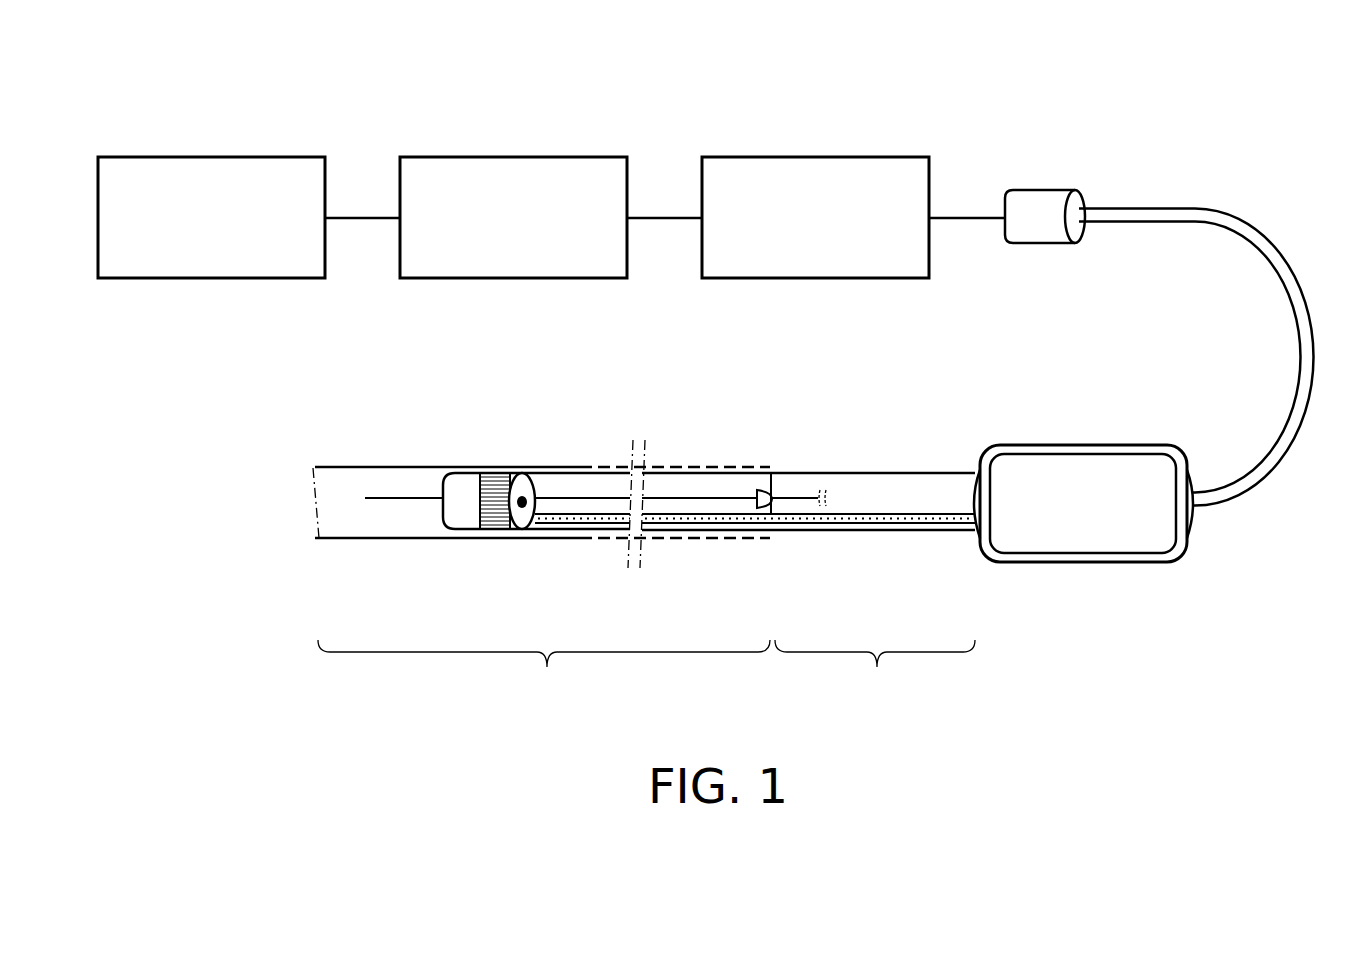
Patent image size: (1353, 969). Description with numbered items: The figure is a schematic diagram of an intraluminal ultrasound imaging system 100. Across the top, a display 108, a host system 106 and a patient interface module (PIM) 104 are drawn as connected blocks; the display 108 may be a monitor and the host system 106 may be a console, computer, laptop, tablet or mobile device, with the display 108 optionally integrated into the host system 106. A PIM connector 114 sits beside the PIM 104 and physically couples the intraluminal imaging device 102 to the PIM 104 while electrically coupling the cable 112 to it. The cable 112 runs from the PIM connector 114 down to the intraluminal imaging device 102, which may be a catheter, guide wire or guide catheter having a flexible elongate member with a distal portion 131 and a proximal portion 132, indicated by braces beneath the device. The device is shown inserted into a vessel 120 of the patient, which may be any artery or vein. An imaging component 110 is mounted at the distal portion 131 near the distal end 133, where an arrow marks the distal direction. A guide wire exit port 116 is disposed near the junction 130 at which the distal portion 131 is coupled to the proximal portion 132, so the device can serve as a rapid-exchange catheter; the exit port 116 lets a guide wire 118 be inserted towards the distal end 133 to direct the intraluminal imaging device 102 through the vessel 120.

The intraluminal ultrasound imaging system 100 is at (1262, 116).
The intraluminal imaging device 102 is at (912, 455).
The patient interface module (PIM) 104 is at (815, 157).
The host system 106 is at (514, 157).
The display 108 is at (212, 157).
The imaging component 110 is at (500, 530).
The cable 112 is at (865, 524).
The PIM connector 114 is at (1047, 190).
The guide wire exit port 116 is at (760, 511).
The guide wire 118 is at (408, 497).
The vessel 120 is at (853, 472).
The junction 130 is at (765, 453).
The distal portion 131 is at (544, 670).
The proximal portion 132 is at (875, 670).
The distal end 133 is at (420, 513).